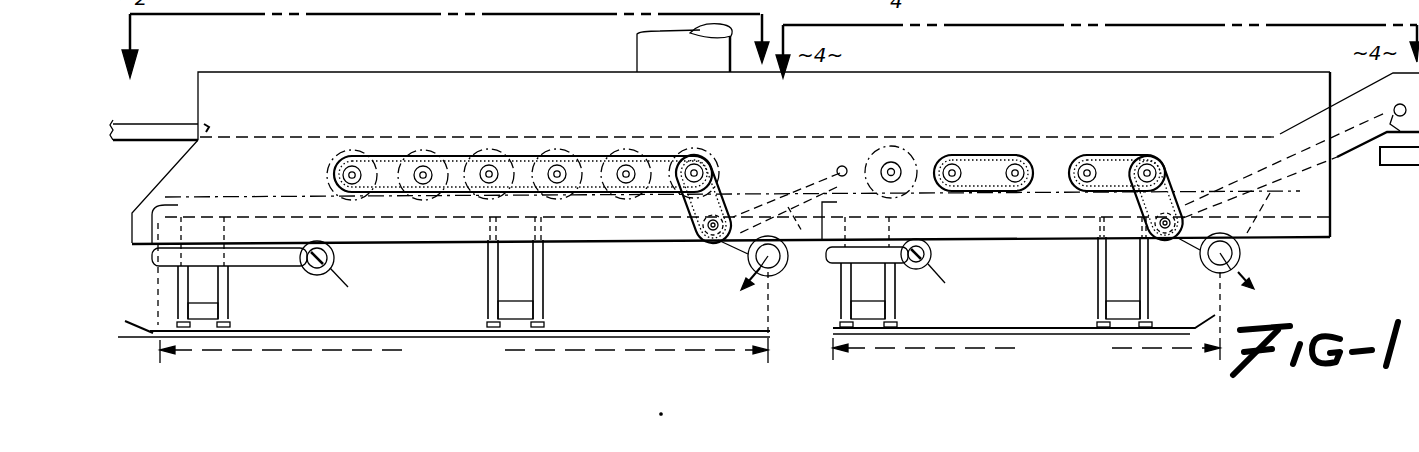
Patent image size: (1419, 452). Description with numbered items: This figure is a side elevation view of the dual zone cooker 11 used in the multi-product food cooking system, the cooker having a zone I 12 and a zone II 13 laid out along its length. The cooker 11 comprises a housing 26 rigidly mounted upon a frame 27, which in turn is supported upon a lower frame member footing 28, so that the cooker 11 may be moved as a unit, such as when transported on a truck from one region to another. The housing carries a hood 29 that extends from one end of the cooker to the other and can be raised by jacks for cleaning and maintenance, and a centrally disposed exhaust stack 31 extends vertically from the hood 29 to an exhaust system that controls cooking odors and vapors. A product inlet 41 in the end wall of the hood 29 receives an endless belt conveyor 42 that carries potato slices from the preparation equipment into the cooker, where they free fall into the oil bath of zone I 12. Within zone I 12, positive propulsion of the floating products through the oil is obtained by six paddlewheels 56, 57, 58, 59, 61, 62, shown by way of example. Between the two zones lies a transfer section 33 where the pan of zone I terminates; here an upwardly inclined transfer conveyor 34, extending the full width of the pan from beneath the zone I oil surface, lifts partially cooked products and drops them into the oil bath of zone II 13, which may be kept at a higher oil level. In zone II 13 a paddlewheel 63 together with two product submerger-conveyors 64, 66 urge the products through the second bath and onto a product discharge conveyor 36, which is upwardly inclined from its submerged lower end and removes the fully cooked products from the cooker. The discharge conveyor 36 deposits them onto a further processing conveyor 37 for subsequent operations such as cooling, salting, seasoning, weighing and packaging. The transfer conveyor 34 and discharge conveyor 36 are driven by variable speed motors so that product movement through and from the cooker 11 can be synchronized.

The dual zone cooker 11 is at (522, 66).
The zone I 12 is at (500, 355).
The zone II 13 is at (1103, 352).
The housing 26 is at (418, 252).
The frame 27 is at (160, 188).
The lower frame member footing 28 is at (316, 330).
The hood 29 is at (996, 113).
The exhaust stack 31 is at (640, 50).
The transfer section 33 is at (785, 290).
The transfer conveyor 34 is at (790, 190).
The product discharge conveyor 36 is at (1340, 184).
The further processing conveyor 37 is at (1417, 167).
The product inlet 41 is at (214, 127).
The endless belt conveyor 42 is at (176, 125).
The paddlewheel 56 is at (377, 137).
The paddlewheel 57 is at (446, 136).
The paddlewheel 58 is at (509, 134).
The paddlewheel 59 is at (577, 136).
The paddlewheel 61 is at (646, 142).
The paddlewheel 62 is at (714, 142).
The paddlewheel 63 is at (914, 142).
The product submerger-conveyor 64 is at (1010, 148).
The product submerger-conveyor 66 is at (1107, 150).